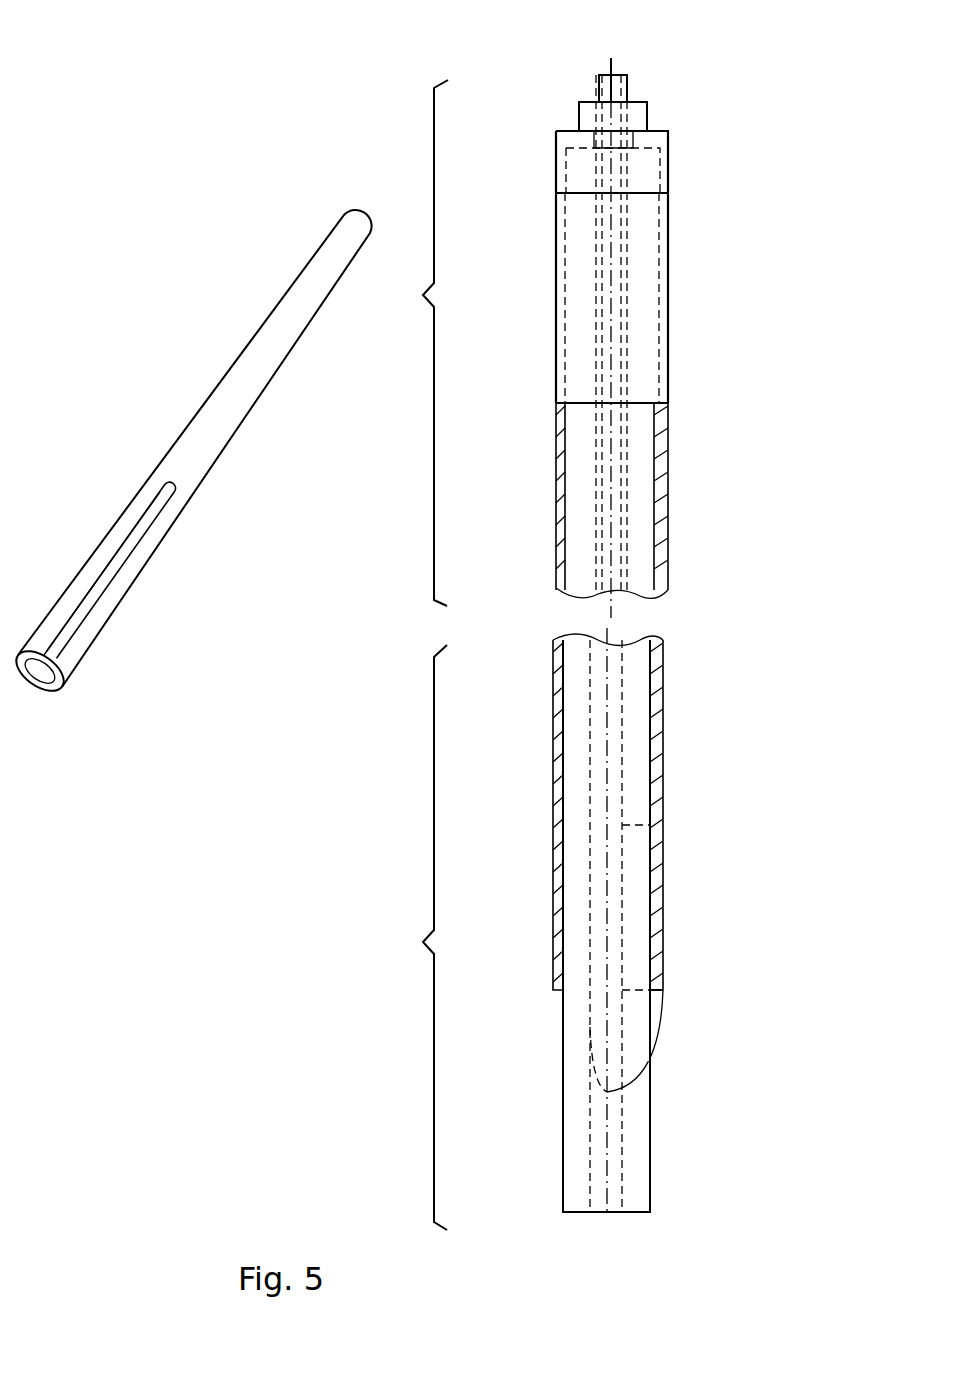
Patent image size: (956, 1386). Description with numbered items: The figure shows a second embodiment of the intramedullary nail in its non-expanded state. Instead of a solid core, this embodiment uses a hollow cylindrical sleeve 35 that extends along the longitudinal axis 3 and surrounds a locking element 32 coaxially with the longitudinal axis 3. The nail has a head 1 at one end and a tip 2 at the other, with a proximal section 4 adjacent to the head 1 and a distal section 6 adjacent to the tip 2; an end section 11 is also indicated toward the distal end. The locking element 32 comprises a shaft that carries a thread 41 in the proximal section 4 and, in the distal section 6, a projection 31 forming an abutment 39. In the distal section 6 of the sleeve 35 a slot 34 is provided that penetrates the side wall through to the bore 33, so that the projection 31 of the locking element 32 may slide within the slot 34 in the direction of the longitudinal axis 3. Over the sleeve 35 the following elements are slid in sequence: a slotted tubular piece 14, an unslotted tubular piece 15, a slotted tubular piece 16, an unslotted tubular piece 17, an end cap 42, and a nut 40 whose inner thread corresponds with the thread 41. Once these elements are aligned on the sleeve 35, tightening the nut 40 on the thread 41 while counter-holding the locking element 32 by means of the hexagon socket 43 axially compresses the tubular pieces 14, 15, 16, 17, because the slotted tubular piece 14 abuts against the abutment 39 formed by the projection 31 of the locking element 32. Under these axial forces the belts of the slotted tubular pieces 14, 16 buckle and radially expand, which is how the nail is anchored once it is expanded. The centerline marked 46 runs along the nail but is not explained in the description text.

The head 1 is at (563, 133).
The tip 2 is at (560, 1212).
The longitudinal axis 3 is at (607, 1212).
The proximal section 4 is at (421, 314).
The distal section 6 is at (416, 959).
The end section 11 is at (573, 1098).
The slotted tubular piece 14 is at (553, 935).
The unslotted tubular piece 15 is at (553, 723).
The slotted tubular piece 16 is at (553, 552).
The unslotted tubular piece 17 is at (553, 478).
The projection 31 is at (657, 1005).
The locking element 32 is at (605, 893).
The bore 33 is at (28, 687).
The slot 34 is at (105, 570).
The hollow cylindrical sleeve 35 is at (305, 300).
The abutment 39 is at (663, 988).
The nut 40 is at (640, 110).
The thread 41 is at (598, 80).
The end cap 42 is at (666, 165).
The hexagon socket 43 is at (614, 78).
The center axis 46 is at (615, 458).